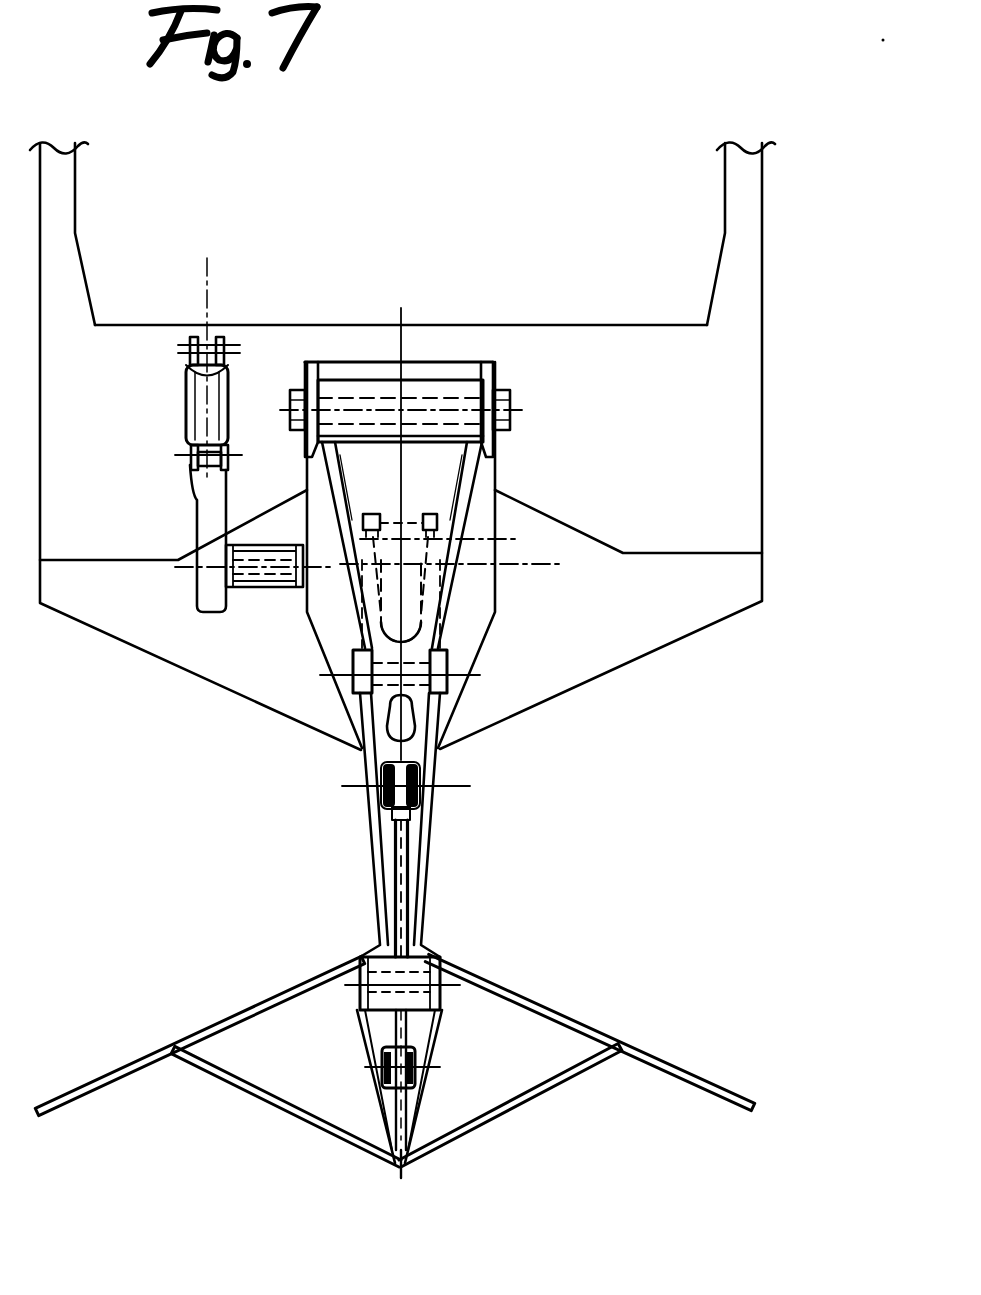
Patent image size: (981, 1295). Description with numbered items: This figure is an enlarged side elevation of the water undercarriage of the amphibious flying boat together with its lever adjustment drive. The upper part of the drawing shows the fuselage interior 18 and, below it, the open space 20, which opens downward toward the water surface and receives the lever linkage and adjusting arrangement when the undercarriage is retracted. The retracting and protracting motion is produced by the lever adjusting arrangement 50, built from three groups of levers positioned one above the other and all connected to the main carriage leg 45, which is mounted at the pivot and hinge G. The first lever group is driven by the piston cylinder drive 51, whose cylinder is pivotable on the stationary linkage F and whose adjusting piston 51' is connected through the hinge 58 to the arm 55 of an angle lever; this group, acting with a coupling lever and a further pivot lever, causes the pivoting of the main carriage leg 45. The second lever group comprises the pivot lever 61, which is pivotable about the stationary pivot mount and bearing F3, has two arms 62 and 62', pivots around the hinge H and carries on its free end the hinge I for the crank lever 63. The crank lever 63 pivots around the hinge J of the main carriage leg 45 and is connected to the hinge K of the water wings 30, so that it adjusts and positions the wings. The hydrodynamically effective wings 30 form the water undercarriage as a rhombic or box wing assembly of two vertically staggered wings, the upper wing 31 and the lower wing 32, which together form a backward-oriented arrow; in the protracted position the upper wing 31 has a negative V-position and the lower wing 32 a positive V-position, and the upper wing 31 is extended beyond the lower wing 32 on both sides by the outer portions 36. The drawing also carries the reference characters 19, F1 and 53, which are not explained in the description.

The interior of the fuselage 18 is at (415, 212).
The hopper floor 19 is at (435, 325).
The open space 20 is at (485, 510).
The stationary pivot mount and bearing F3 is at (525, 410).
The arm of pivot lever 62 is at (472, 533).
The pivot lever 61 is at (462, 603).
The pivot and hinge G is at (454, 537).
The axis F1 is at (542, 568).
The hinge H is at (470, 675).
The arm of pivot lever 62' is at (492, 731).
The hinge I is at (417, 791).
The main carriage leg 45 is at (370, 815).
The crank lever 63 is at (408, 922).
The hinge of the main carriage leg J is at (445, 985).
The hinge of the water wings K is at (425, 1065).
The outer portions of upper wing 36 is at (125, 1070).
The lower wing 32 is at (576, 1086).
The hydrodynamically effective wings 30 is at (543, 880).
The upper wing 31 is at (553, 990).
The lever adjusting arrangement 50 is at (352, 914).
The stationary linkage F is at (177, 348).
The piston cylinder drive 51 is at (148, 369).
The adjusting piston 51' is at (166, 414).
The hinge 58 is at (230, 454).
The arm of angle lever 55 is at (208, 500).
The clamp 53 is at (216, 630).